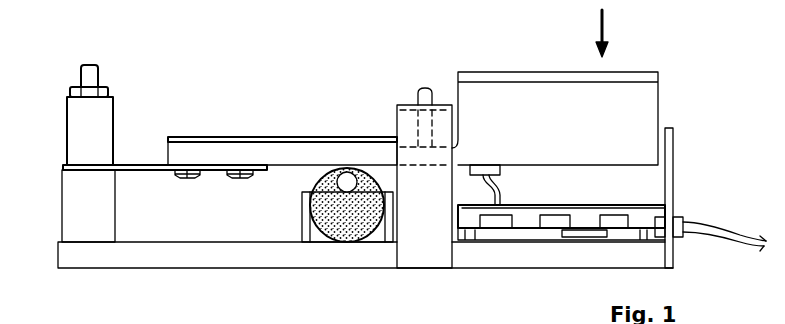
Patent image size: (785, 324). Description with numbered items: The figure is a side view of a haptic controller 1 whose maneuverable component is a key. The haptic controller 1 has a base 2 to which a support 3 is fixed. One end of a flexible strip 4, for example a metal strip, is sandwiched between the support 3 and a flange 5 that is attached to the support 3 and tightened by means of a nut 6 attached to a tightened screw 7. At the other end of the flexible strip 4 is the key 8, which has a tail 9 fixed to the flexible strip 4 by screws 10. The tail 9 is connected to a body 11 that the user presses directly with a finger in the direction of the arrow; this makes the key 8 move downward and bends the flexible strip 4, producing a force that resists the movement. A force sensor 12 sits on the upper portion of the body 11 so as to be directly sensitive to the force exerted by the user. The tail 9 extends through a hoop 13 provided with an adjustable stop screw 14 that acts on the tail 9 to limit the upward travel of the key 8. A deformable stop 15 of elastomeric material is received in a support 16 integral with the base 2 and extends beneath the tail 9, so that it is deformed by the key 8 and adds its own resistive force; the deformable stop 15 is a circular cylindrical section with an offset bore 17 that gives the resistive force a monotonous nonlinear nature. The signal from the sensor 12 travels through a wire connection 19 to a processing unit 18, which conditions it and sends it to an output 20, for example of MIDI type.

The haptic controller 1 is at (704, 172).
The base 2 is at (195, 255).
The support 3 is at (88, 219).
The flexible strip 4 is at (137, 171).
The flange 5 is at (88, 125).
The nut 6 is at (107, 88).
The screw 7 is at (86, 75).
The key 8 is at (293, 137).
The tail 9 is at (238, 153).
The screws 10 is at (243, 180).
The body 11 is at (465, 93).
The force sensor 12 is at (547, 77).
The hoop 13 is at (398, 113).
The adjustable stop screw 14 is at (418, 98).
The deformable stop 15 is at (318, 228).
The support 16 is at (302, 197).
The bore 17 is at (345, 170).
The processing unit 18 is at (528, 206).
The wire connection 19 is at (500, 200).
The output 20 is at (683, 217).